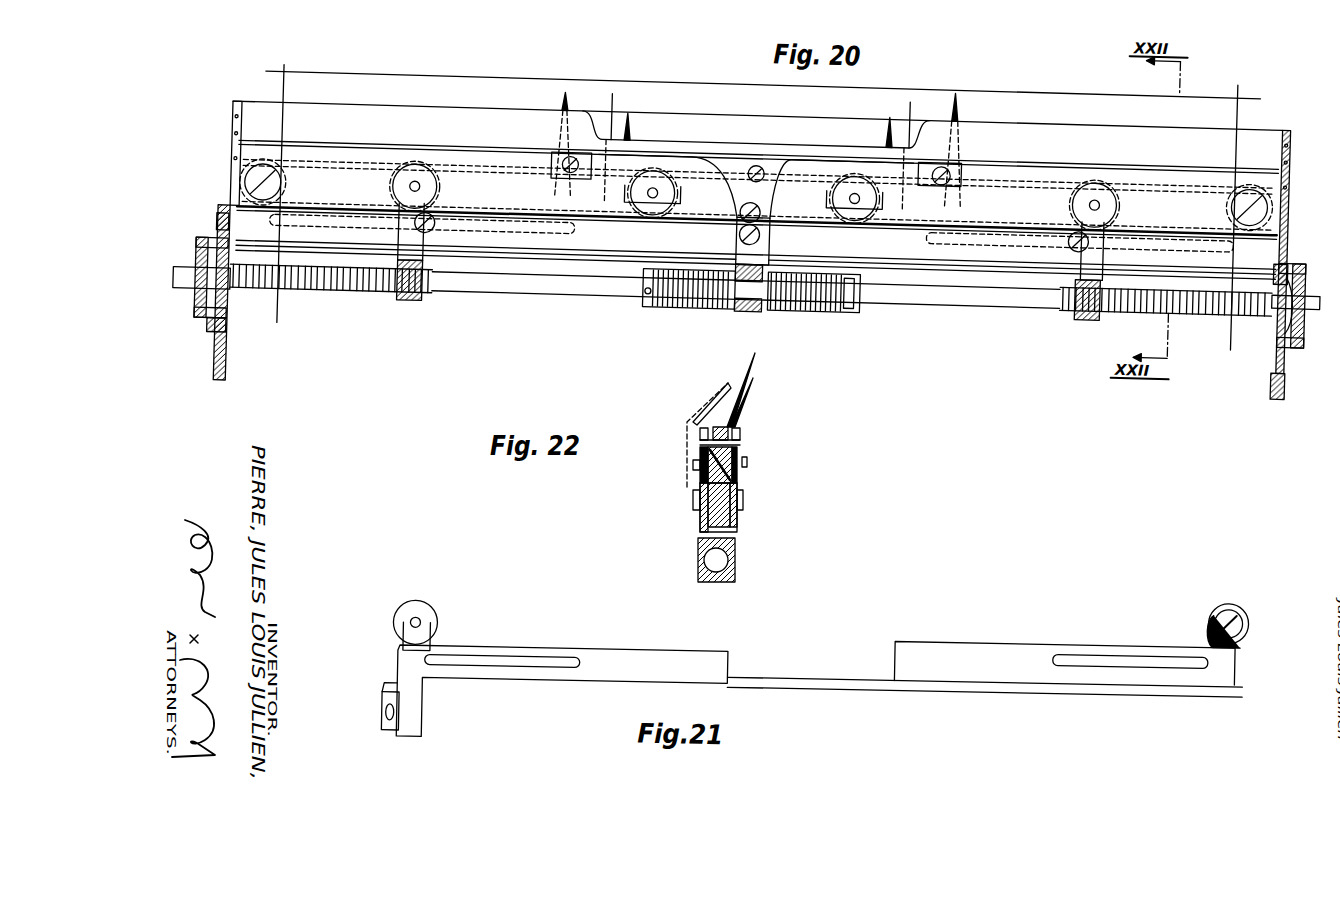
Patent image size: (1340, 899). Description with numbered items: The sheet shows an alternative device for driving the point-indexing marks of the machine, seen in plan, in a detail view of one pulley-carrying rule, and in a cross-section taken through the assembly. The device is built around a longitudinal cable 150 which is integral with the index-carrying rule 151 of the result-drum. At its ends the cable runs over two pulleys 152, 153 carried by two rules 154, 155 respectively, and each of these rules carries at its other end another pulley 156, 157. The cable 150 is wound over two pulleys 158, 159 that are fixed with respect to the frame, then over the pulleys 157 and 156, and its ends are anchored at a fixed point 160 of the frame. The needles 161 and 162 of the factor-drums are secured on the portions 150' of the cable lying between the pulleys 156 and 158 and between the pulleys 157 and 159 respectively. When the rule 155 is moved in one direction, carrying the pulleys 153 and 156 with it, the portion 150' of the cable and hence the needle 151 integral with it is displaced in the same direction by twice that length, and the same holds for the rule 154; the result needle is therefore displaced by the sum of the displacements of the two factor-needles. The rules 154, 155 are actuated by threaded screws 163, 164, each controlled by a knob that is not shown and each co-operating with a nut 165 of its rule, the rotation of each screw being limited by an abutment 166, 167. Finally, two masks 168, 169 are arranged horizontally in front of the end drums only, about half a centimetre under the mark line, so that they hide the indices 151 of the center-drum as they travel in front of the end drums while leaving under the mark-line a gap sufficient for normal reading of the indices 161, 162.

In FIG. 20, the longitudinal cable 150 is at (766, 232).
In FIG. 22, the longitudinal cable 150 is at (756, 434).
In FIG. 20, the cable portions 150' is at (814, 123).
In FIG. 22, the cable portions 150' is at (679, 435).
In FIG. 20, the index-carrying rule 151 is at (632, 111).
In FIG. 22, the index-carrying rule 151 is at (745, 403).
In FIG. 20, the pulley 152 is at (268, 158).
In FIG. 22, the pulley 152 is at (747, 463).
In FIG. 20, the pulley 153 is at (1289, 145).
In FIG. 20, the rule 154 is at (913, 240).
In FIG. 22, the rule 154 is at (702, 537).
In FIG. 20, the rule 155 is at (636, 236).
In FIG. 21, the rule 155 is at (956, 678).
In FIG. 20, the pulley 156 is at (419, 167).
In FIG. 21, the pulley 156 is at (421, 613).
In FIG. 20, the pulley 157 is at (1102, 165).
In FIG. 22, the pulley 157 is at (697, 478).
In FIG. 21, the pulley 157 is at (1229, 594).
In FIG. 20, the pulley 158 is at (661, 160).
In FIG. 20, the pulley 159 is at (862, 154).
In FIG. 22, the pulley 159 is at (745, 475).
In FIG. 20, the anchoring point 160 is at (762, 197).
In FIG. 20, the needle 161 is at (568, 88).
In FIG. 22, the needle 161 is at (752, 373).
In FIG. 20, the needle 162 is at (956, 102).
In FIG. 20, the threaded screw 163 is at (1216, 290).
In FIG. 22, the threaded screw 163 is at (722, 563).
In FIG. 20, the threaded screw 164 is at (332, 291).
In FIG. 20, the nut 165 is at (421, 297).
In FIG. 22, the nut 165 is at (710, 580).
In FIG. 21, the nut 165 is at (395, 738).
In FIG. 20, the abutment 166 is at (826, 290).
In FIG. 20, the abutment 167 is at (706, 288).
In FIG. 20, the mask 168 is at (566, 80).
In FIG. 20, the mask 169 is at (1074, 118).
In FIG. 22, the mask 169 is at (705, 418).